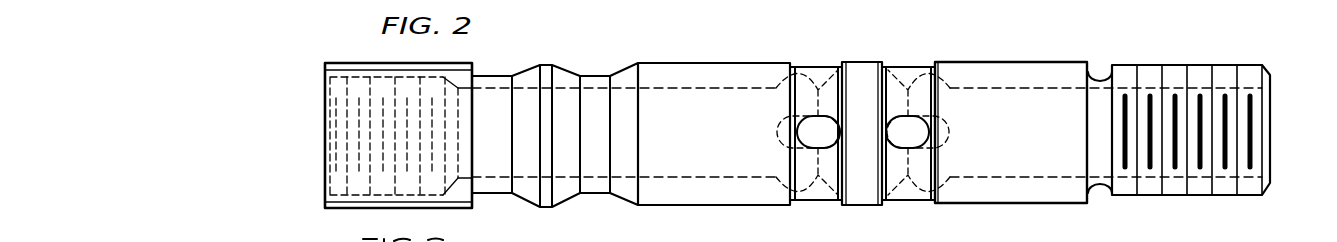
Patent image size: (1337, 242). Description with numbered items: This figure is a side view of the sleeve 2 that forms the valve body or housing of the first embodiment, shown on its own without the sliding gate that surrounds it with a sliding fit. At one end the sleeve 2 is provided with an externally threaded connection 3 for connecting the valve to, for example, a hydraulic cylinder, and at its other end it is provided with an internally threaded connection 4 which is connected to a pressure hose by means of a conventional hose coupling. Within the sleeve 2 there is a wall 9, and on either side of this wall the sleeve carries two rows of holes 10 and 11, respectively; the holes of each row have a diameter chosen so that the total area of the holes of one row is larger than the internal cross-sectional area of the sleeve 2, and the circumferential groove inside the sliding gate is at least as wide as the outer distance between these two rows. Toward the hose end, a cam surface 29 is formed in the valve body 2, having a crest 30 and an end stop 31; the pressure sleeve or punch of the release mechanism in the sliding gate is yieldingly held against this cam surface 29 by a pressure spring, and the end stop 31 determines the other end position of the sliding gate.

The sleeve 2 is at (988, 61).
The externally threaded connection 3 is at (1197, 72).
The internally threaded connection 4 is at (347, 63).
The wall 9 is at (860, 68).
The row of holes 10 is at (816, 62).
The row of holes 11 is at (903, 61).
The cam surface 29 is at (582, 74).
The crest 30 is at (545, 64).
The end stop 31 is at (474, 67).